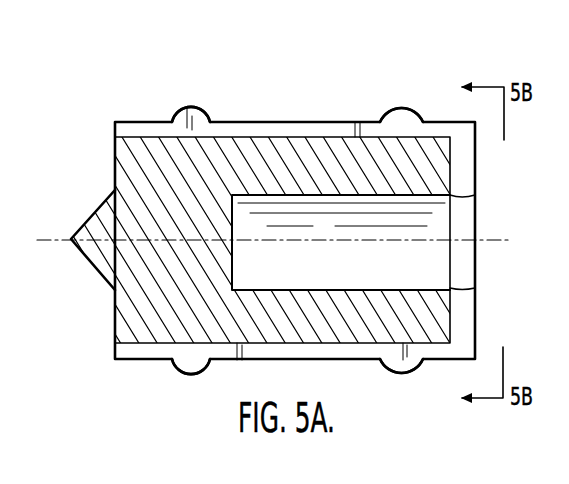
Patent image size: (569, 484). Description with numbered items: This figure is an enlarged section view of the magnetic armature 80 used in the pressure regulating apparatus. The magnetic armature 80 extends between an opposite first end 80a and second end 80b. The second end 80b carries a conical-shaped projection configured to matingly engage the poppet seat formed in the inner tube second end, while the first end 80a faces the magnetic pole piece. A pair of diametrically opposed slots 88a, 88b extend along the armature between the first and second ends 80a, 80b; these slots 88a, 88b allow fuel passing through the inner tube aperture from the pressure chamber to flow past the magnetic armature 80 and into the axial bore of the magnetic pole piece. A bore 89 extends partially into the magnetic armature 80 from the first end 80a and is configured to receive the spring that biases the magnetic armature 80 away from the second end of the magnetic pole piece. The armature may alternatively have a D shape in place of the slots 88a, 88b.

The magnetic armature 80 is at (362, 94).
The first end 80a is at (476, 309).
The second end 80b is at (97, 213).
The slot 88a is at (245, 123).
The slot 88b is at (226, 354).
The bore 89 is at (425, 292).